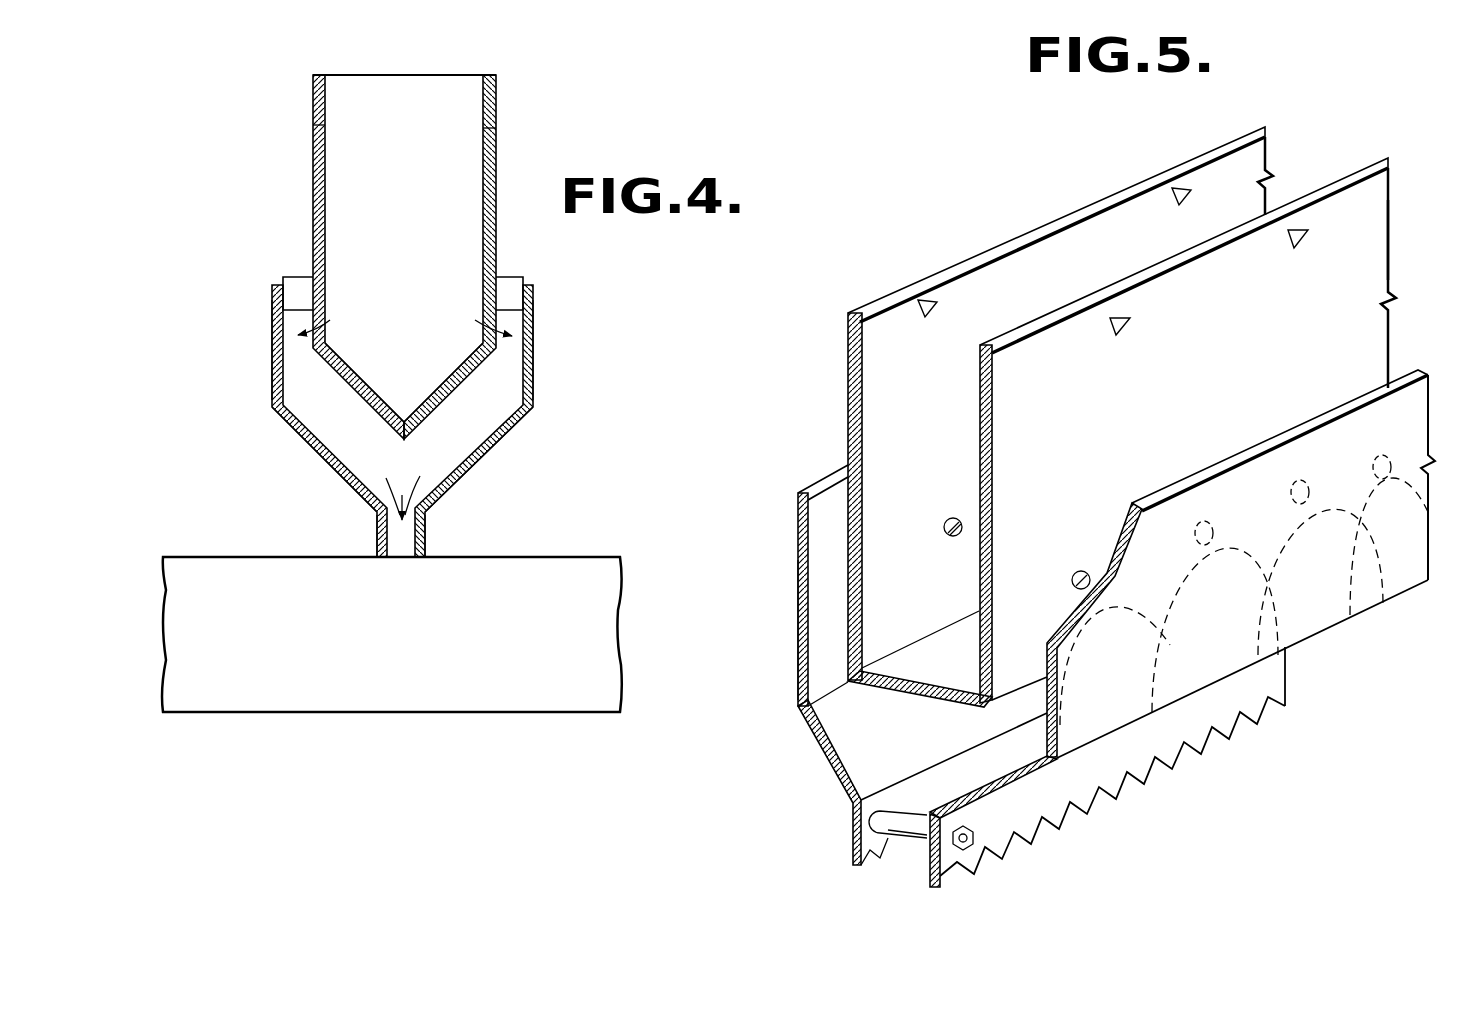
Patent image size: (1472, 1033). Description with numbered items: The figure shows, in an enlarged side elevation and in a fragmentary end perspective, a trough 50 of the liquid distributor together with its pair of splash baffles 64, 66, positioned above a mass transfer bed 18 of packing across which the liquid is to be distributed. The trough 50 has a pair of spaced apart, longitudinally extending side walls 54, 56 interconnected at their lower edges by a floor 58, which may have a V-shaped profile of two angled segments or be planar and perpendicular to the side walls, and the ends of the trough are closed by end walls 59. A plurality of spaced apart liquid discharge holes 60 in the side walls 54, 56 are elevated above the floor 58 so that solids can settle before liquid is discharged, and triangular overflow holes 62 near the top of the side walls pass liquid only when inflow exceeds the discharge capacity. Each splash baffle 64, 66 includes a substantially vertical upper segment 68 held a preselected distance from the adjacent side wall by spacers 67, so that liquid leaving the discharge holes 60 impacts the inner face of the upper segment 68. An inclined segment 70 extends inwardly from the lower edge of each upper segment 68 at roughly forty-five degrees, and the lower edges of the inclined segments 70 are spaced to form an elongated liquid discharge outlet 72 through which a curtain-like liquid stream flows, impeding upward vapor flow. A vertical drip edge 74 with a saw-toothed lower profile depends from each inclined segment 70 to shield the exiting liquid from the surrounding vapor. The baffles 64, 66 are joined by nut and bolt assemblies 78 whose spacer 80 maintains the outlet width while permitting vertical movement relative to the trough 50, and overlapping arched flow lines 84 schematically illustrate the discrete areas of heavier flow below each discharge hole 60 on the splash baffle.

In FIG. 4, the mass transfer bed 18 is at (511, 556).
In FIG. 4, the trough 50 is at (500, 94).
In FIG. 5, the trough 50 is at (1320, 182).
In FIG. 4, the side wall 54 is at (496, 173).
In FIG. 5, the side wall 54 is at (1388, 254).
In FIG. 4, the side wall 56 is at (327, 194).
In FIG. 5, the side wall 56 is at (1093, 210).
In FIG. 4, the floor 58 is at (357, 390).
In FIG. 5, the floor 58 is at (928, 682).
In FIG. 4, the end wall 59 is at (404, 102).
In FIG. 4, the liquid discharge hole 60 is at (320, 324).
In FIG. 5, the liquid discharge hole 60 is at (945, 531).
In FIG. 4, the overflow hole 62 is at (318, 128).
In FIG. 5, the overflow hole 62 is at (1296, 246).
In FIG. 4, the splash baffle 64 is at (535, 385).
In FIG. 5, the splash baffle 64 is at (1430, 443).
In FIG. 4, the splash baffle 66 is at (271, 395).
In FIG. 5, the splash baffle 66 is at (797, 540).
In FIG. 4, the spacer 67 is at (296, 283).
In FIG. 4, the upper segment 68 is at (283, 340).
In FIG. 5, the upper segment 68 is at (798, 643).
In FIG. 4, the inclined segment 70 is at (330, 463).
In FIG. 5, the inclined segment 70 is at (831, 768).
In FIG. 4, the liquid discharge outlet 72 is at (422, 512).
In FIG. 5, the liquid discharge outlet 72 is at (960, 775).
In FIG. 4, the drip edge 74 is at (377, 538).
In FIG. 5, the drip edge 74 is at (1287, 681).
In FIG. 5, the nut and bolt assembly 78 is at (968, 836).
In FIG. 5, the spacer 80 is at (895, 812).
In FIG. 5, the arched flow lines 84 is at (1170, 645).